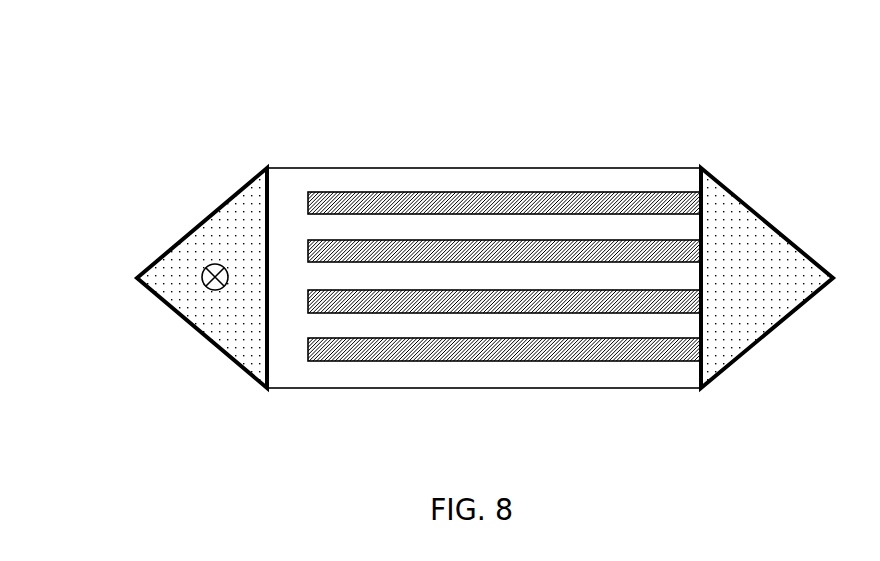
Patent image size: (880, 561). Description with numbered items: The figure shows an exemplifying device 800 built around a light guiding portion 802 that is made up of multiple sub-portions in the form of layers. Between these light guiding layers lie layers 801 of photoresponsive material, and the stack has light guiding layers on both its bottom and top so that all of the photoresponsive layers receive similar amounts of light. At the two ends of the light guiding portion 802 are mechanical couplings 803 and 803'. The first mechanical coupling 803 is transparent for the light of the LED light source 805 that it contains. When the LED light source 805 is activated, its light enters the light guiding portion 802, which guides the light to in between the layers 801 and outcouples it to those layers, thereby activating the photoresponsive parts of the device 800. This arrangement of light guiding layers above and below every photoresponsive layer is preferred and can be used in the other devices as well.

The device 800 is at (98, 173).
The layers of photoresponsive material 801 is at (446, 240).
The light guiding portion 802 is at (323, 178).
The mechanical coupling 803 is at (202, 264).
The mechanical coupling 803' is at (767, 263).
The LED light source 805 is at (208, 290).